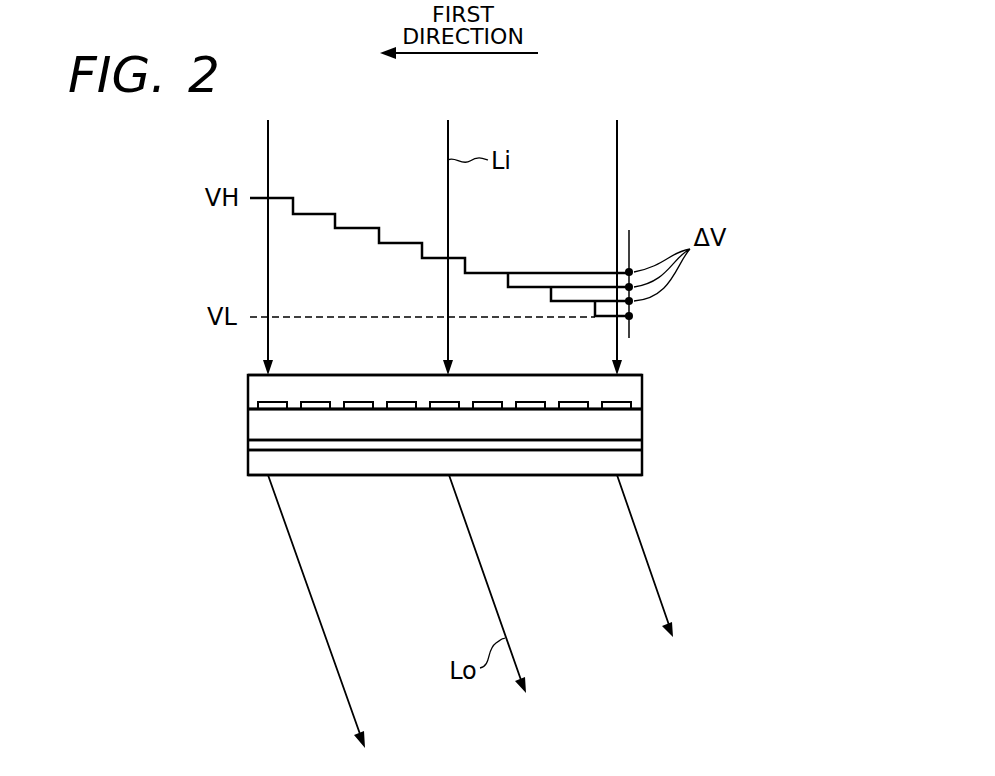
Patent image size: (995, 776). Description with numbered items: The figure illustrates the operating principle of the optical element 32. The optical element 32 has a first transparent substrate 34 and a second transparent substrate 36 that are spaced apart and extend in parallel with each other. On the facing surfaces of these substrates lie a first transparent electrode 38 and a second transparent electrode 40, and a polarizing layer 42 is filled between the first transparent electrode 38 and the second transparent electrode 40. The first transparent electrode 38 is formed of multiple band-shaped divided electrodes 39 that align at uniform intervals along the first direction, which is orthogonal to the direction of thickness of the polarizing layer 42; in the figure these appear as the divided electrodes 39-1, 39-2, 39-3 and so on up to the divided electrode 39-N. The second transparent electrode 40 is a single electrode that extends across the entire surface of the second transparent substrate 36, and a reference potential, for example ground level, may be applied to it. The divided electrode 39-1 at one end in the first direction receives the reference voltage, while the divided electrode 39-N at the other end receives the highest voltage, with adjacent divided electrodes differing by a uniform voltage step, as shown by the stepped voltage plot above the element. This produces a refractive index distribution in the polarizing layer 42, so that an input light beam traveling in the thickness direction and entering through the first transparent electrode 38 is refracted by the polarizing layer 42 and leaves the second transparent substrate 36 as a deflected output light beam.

The optical element 32 is at (683, 318).
The first transparent substrate 34 is at (483, 383).
The second transparent substrate 36 is at (549, 478).
The first transparent electrode 38 is at (318, 411).
The divided electrodes 39 is at (312, 410).
The divided electrode 39-1 is at (620, 401).
The divided electrode 39-2 is at (577, 402).
The divided electrode 39-3 is at (536, 401).
The divided electrode 39-N is at (272, 401).
The second transparent electrode 40 is at (378, 432).
The polarizing layer 42 is at (633, 430).